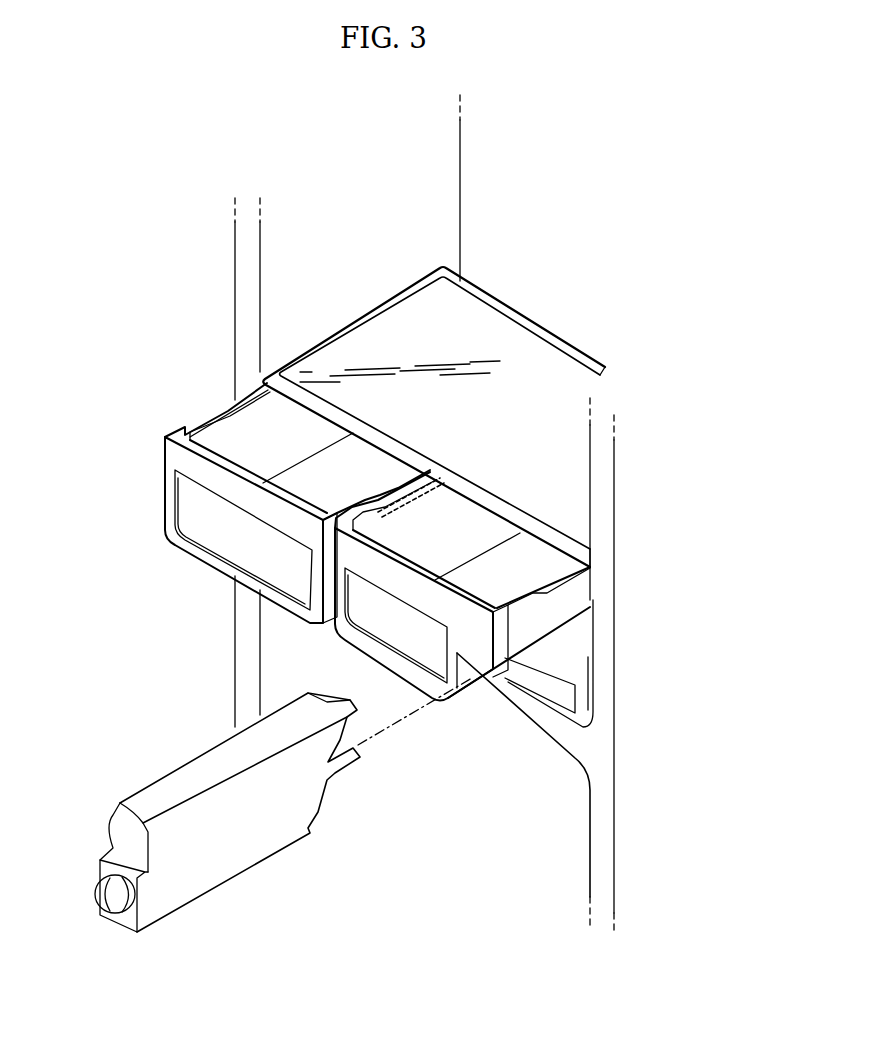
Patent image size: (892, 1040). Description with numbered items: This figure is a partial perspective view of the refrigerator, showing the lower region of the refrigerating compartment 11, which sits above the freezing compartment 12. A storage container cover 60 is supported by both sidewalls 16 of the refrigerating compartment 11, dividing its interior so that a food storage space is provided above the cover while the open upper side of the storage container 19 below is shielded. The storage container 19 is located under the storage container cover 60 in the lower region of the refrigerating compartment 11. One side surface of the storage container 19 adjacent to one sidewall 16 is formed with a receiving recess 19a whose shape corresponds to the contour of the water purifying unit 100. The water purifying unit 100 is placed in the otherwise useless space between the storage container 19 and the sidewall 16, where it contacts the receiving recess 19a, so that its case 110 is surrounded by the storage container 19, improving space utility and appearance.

The refrigerating compartment 11 is at (497, 265).
The freezing compartment 12 is at (462, 770).
The sidewall 16 is at (280, 272).
The storage container 19 is at (167, 452).
The receiving recess 19a is at (527, 642).
The storage container cover 60 is at (570, 505).
The water purifying unit 100 is at (216, 812).
The case 110 is at (255, 848).